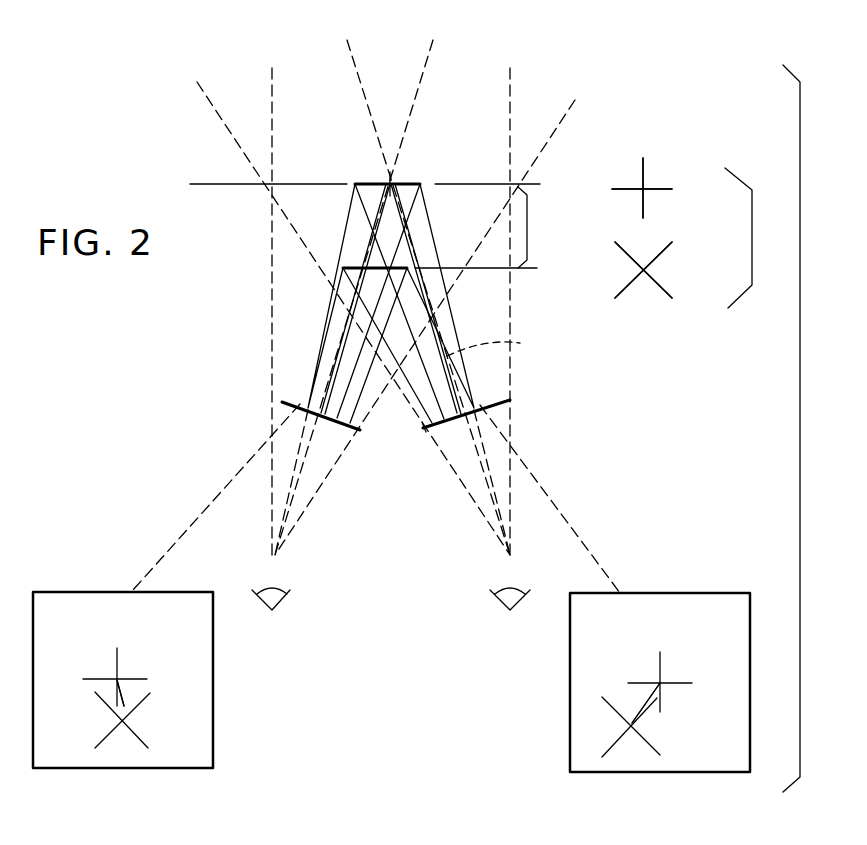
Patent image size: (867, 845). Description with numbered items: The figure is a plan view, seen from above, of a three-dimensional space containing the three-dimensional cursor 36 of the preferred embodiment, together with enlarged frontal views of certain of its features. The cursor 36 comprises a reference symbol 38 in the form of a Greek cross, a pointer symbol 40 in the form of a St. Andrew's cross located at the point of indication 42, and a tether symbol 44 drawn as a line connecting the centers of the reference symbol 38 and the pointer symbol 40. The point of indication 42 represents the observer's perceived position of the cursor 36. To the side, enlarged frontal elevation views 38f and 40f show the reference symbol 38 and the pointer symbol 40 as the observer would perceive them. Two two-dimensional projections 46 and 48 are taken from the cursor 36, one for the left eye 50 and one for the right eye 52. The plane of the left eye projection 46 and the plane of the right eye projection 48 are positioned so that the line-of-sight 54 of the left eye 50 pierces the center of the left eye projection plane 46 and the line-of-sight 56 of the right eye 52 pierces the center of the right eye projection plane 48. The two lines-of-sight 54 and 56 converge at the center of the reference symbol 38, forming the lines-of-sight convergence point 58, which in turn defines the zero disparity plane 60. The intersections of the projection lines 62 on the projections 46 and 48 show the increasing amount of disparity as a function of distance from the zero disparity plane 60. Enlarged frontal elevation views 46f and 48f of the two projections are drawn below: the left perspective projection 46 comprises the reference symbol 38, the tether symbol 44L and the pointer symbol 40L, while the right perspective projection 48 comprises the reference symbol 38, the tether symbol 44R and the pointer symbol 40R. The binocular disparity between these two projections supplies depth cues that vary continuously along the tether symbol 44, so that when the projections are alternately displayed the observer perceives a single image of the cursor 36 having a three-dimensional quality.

The three-dimensional cursor 36 is at (528, 225).
The reference symbol 38 is at (373, 183).
The enlarged frontal elevation view of reference symbol 38f is at (658, 172).
The pointer symbol 40 is at (353, 266).
The enlarged frontal elevation view of pointer symbol 40f is at (673, 265).
The left pointer symbol 40L is at (147, 742).
The right pointer symbol 40R is at (653, 742).
The point of indication 42 is at (376, 262).
The tether symbol 44 is at (386, 220).
The left tether symbol 44L is at (120, 705).
The right tether symbol 44R is at (650, 697).
The left eye projection 46 is at (283, 403).
The enlarged frontal elevation view of left eye projection 46f is at (73, 772).
The right eye projection 48 is at (508, 402).
The enlarged frontal elevation view of right eye projection 48f is at (607, 773).
The left eye 50 is at (280, 602).
The right eye 52 is at (502, 603).
The line-of-sight of left eye 54 is at (330, 352).
The line-of-sight of right eye 56 is at (520, 343).
The lines-of-sight convergence point 58 is at (390, 183).
The zero disparity plane 60 is at (210, 183).
The projection lines 62 is at (328, 315).